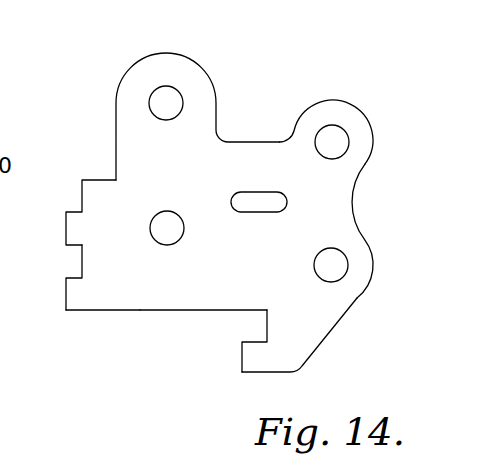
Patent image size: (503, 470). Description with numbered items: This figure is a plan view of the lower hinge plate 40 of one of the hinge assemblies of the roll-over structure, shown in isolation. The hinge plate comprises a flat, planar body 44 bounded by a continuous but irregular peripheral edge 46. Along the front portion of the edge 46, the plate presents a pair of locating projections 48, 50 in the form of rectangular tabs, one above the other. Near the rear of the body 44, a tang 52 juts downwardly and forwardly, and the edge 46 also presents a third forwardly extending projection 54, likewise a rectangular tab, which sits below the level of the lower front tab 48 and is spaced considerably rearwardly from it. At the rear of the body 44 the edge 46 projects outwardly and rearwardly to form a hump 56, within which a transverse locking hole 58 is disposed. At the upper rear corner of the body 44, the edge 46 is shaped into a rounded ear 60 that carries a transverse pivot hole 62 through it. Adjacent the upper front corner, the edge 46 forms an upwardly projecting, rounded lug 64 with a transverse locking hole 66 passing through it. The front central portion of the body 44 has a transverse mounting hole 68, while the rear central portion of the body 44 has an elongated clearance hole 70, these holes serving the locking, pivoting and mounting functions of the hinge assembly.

The lower hinge plate 40 is at (350, 78).
The body 44 is at (196, 290).
The peripheral edge 46 is at (108, 318).
The locating projection 48 is at (66, 296).
The locating projection 50 is at (66, 230).
The tang 52 is at (312, 333).
The third forwardly extending projection 54 is at (241, 364).
The hump 56 is at (362, 275).
The locking hole 58 is at (337, 260).
The rounded ear 60 is at (358, 122).
The pivot hole 62 is at (340, 145).
The rounded lug 64 is at (185, 72).
The locking hole 66 is at (172, 100).
The mounting hole 68 is at (172, 232).
The clearance hole 70 is at (258, 212).